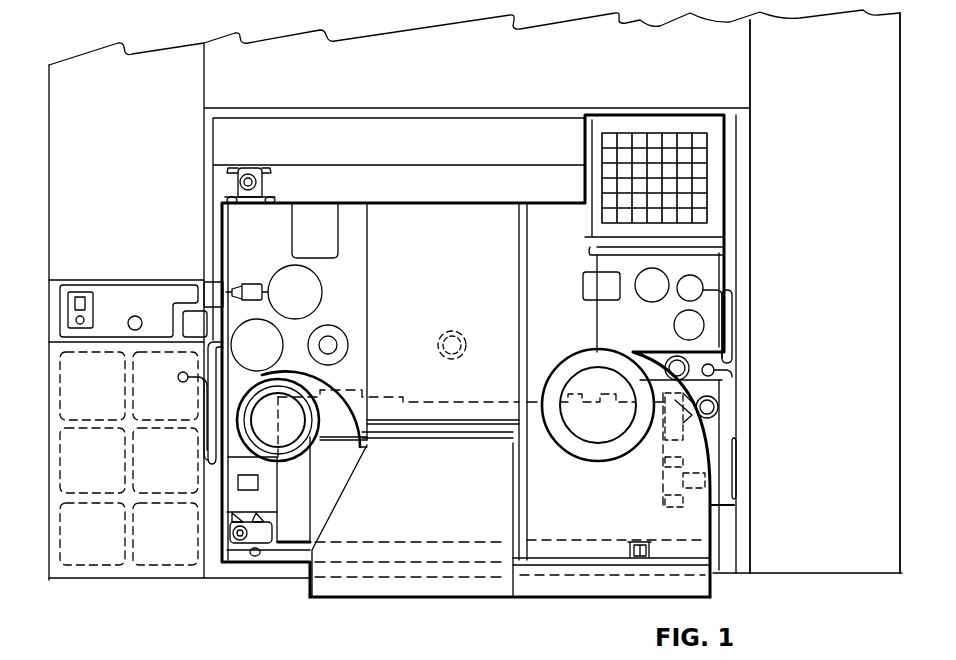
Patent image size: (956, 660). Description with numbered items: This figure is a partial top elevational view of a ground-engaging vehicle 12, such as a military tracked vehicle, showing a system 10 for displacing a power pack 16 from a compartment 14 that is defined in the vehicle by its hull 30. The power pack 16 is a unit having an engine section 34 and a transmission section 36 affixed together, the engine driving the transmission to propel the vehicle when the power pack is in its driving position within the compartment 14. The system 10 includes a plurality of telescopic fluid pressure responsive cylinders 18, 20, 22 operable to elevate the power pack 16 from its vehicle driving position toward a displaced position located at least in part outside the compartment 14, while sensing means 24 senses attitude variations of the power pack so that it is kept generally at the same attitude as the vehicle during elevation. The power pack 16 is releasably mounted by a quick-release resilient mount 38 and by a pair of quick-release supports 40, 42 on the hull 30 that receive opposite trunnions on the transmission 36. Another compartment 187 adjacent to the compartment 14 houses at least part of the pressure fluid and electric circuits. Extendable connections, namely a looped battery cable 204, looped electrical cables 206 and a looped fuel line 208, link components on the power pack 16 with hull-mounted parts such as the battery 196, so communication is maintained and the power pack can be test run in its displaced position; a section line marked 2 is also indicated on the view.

The system 10 is at (283, 33).
The vehicle 12 is at (843, 578).
The compartment 14 is at (250, 577).
The power pack 16 is at (467, 607).
The telescopic fluid pressure responsive cylinder 18 is at (253, 170).
The telescopic fluid pressure responsive cylinder 20 is at (237, 545).
The telescopic fluid pressure responsive cylinder 22 is at (712, 409).
The sensing means 24 is at (462, 340).
The hull 30 is at (772, 578).
The engine section 34 is at (460, 217).
The transmission section 36 is at (378, 542).
The quick-release resilient mount 38 is at (641, 545).
The quick-release support 40 is at (271, 475).
The quick-release support 42 is at (674, 506).
The compartment 187 is at (143, 293).
The battery 196 is at (108, 553).
The looped battery cable 204 is at (197, 440).
The looped electrical cables 206 is at (734, 505).
The looped fuel line 208 is at (737, 318).
The section line 2- 2 is at (737, 372).